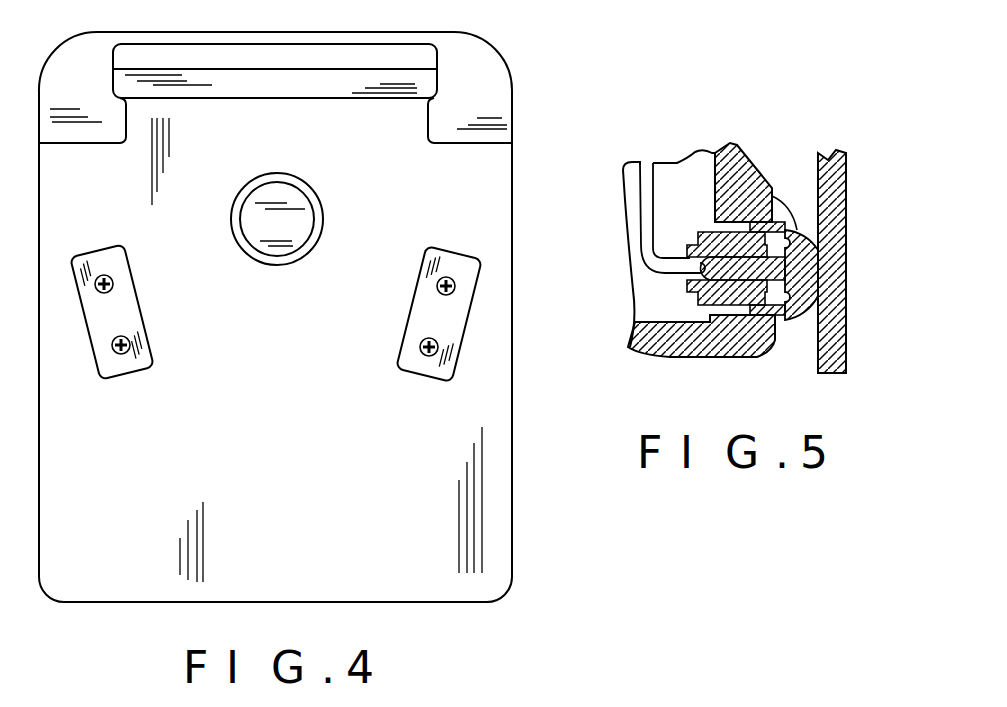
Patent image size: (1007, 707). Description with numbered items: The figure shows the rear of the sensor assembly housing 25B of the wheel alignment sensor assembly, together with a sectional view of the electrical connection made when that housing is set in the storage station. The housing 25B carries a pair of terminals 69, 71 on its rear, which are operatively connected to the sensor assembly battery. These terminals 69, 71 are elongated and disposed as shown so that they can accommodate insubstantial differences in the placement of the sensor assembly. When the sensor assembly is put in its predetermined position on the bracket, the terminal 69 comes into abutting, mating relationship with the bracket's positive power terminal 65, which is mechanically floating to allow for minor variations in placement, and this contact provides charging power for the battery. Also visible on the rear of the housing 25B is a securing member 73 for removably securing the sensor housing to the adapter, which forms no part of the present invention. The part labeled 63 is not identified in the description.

In FIG. 4, the sensor assembly housing 25B is at (292, 497).
In FIG. 5, the resilient seal strip 63 is at (637, 225).
In FIG. 5, the positive power terminal 65 is at (808, 230).
In FIG. 4, the terminal 69 is at (145, 320).
In FIG. 5, the terminal 69 is at (818, 348).
In FIG. 4, the terminal 71 is at (407, 327).
In FIG. 4, the securing member 73 is at (323, 213).